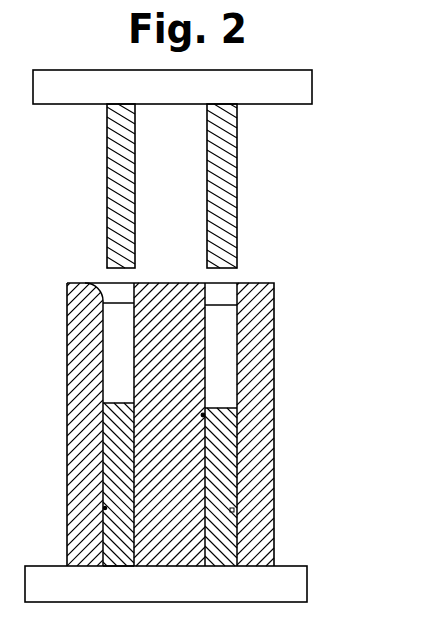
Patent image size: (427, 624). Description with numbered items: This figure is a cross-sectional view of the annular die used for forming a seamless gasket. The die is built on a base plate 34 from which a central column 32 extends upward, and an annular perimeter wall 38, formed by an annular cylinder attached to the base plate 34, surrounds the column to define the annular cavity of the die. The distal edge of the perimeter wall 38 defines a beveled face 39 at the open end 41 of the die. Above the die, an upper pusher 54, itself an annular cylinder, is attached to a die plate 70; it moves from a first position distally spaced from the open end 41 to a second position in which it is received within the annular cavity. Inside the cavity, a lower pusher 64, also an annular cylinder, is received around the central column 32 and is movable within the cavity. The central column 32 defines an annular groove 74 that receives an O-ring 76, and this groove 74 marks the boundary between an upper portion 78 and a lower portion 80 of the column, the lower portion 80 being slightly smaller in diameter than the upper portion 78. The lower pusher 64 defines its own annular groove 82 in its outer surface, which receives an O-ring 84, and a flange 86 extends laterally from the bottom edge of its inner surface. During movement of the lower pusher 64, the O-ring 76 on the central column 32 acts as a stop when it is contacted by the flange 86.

The die plate 70 is at (286, 82).
The upper pusher 54 is at (223, 188).
The beveled face 39 is at (242, 283).
The open end 41 is at (108, 288).
The upper portion 78 is at (207, 338).
The perimeter wall 38 is at (263, 350).
The central column 32 is at (204, 377).
The annular groove 74 is at (205, 408).
The O-ring 76 is at (205, 416).
The lower pusher 64 is at (220, 453).
The lower portion 80 is at (205, 496).
The annular groove 82 is at (105, 508).
The O-ring 84 is at (103, 512).
The flange 86 is at (123, 566).
The base plate 34 is at (293, 582).